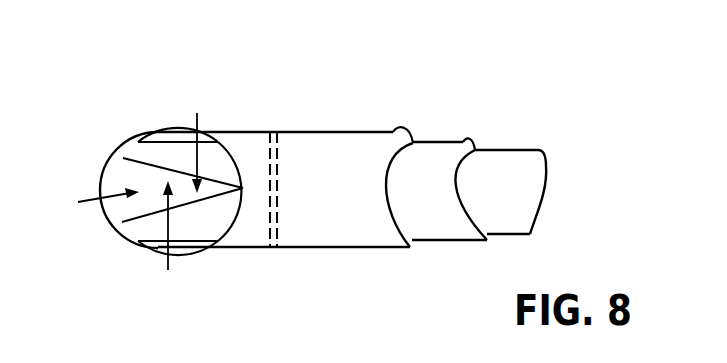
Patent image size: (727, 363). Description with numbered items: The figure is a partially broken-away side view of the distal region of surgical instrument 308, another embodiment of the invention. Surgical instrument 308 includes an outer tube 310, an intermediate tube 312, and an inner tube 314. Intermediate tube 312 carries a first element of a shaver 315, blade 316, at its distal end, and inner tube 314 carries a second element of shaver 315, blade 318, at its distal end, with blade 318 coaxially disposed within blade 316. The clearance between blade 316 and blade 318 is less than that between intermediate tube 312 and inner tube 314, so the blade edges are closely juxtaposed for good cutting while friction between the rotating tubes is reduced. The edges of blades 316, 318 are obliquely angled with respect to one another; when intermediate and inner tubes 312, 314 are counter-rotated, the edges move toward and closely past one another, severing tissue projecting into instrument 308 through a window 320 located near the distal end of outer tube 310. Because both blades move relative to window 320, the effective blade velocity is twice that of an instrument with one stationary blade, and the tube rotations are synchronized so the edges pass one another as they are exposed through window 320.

The surgical instrument 308 is at (328, 104).
The outer tube 310 is at (342, 182).
The intermediate tube 312 is at (443, 186).
The inner tube 314 is at (525, 189).
The shaver 315 is at (110, 139).
The blade 316 is at (179, 157).
The blade 318 is at (190, 220).
The window 320 is at (85, 204).